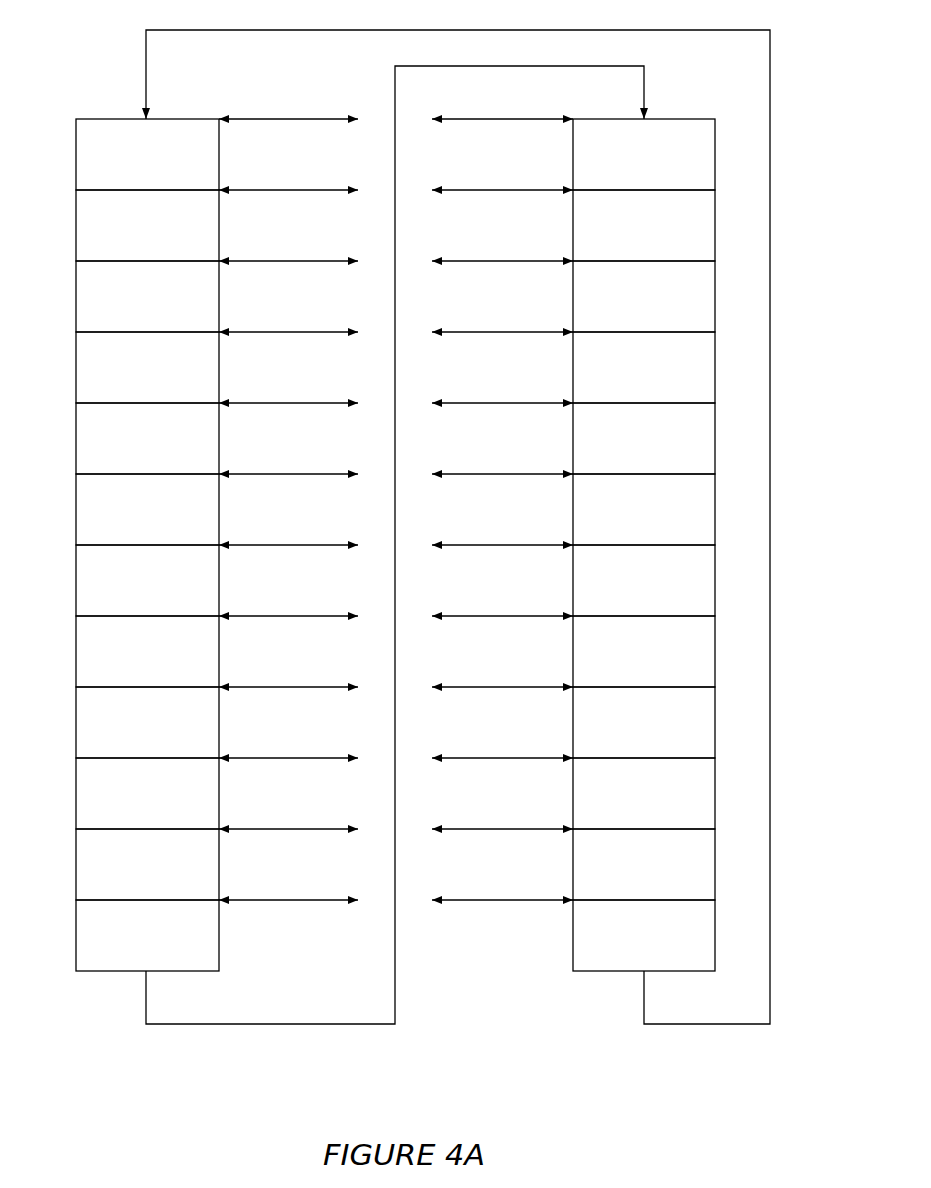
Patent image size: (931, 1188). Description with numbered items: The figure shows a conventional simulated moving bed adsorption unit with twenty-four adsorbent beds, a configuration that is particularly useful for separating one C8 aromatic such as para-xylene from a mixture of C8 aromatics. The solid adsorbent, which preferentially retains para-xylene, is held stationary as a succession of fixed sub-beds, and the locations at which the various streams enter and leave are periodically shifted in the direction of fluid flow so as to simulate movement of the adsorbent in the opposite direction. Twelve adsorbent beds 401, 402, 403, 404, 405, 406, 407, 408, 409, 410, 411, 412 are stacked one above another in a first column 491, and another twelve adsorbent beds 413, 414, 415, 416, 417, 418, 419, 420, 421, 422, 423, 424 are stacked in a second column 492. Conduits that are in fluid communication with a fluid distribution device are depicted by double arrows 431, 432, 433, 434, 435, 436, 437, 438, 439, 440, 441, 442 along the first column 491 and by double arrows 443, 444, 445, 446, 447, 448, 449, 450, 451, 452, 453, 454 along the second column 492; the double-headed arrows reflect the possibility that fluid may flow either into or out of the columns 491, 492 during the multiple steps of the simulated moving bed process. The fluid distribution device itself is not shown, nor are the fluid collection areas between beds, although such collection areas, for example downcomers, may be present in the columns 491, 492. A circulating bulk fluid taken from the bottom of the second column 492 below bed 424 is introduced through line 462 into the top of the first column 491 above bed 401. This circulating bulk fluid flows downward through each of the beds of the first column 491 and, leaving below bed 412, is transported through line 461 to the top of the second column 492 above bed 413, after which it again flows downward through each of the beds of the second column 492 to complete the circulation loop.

The adsorbent bed 401 is at (147, 154).
The adsorbent bed 402 is at (147, 225).
The adsorbent bed 403 is at (147, 296).
The adsorbent bed 404 is at (147, 367).
The adsorbent bed 405 is at (147, 438).
The adsorbent bed 406 is at (147, 509).
The adsorbent bed 407 is at (147, 580).
The adsorbent bed 408 is at (147, 651).
The adsorbent bed 409 is at (147, 722).
The adsorbent bed 410 is at (147, 793).
The adsorbent bed 411 is at (147, 864).
The adsorbent bed 412 is at (147, 935).
The adsorbent bed 413 is at (644, 154).
The adsorbent bed 414 is at (644, 225).
The adsorbent bed 415 is at (644, 296).
The adsorbent bed 416 is at (644, 367).
The adsorbent bed 417 is at (644, 438).
The adsorbent bed 418 is at (644, 509).
The adsorbent bed 419 is at (644, 580).
The adsorbent bed 420 is at (644, 651).
The adsorbent bed 421 is at (644, 722).
The adsorbent bed 422 is at (644, 793).
The adsorbent bed 423 is at (644, 864).
The adsorbent bed 424 is at (644, 935).
The double arrow 431 is at (345, 117).
The double arrow 432 is at (345, 188).
The double arrow 433 is at (345, 259).
The double arrow 434 is at (345, 330).
The double arrow 435 is at (345, 401).
The double arrow 436 is at (345, 472).
The double arrow 437 is at (345, 543).
The double arrow 438 is at (345, 614).
The double arrow 439 is at (345, 685).
The double arrow 440 is at (345, 756).
The double arrow 441 is at (345, 827).
The double arrow 442 is at (345, 898).
The double arrow 443 is at (447, 117).
The double arrow 444 is at (447, 188).
The double arrow 445 is at (447, 259).
The double arrow 446 is at (447, 330).
The double arrow 447 is at (447, 401).
The double arrow 448 is at (447, 472).
The double arrow 449 is at (447, 543).
The double arrow 450 is at (447, 614).
The double arrow 451 is at (447, 685).
The double arrow 452 is at (447, 756).
The double arrow 453 is at (447, 827).
The double arrow 454 is at (447, 898).
The line 461 is at (143, 1005).
The line 462 is at (642, 1005).
The first column 491 is at (108, 117).
The second column 492 is at (682, 117).